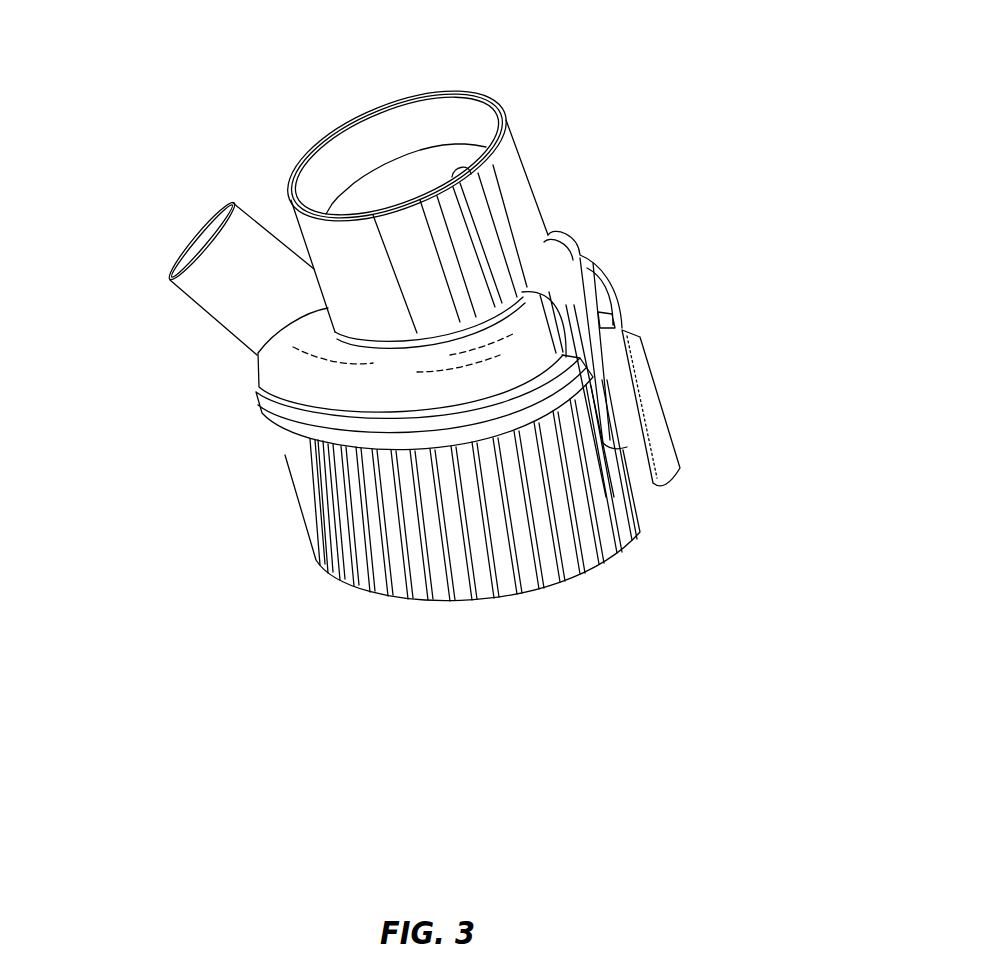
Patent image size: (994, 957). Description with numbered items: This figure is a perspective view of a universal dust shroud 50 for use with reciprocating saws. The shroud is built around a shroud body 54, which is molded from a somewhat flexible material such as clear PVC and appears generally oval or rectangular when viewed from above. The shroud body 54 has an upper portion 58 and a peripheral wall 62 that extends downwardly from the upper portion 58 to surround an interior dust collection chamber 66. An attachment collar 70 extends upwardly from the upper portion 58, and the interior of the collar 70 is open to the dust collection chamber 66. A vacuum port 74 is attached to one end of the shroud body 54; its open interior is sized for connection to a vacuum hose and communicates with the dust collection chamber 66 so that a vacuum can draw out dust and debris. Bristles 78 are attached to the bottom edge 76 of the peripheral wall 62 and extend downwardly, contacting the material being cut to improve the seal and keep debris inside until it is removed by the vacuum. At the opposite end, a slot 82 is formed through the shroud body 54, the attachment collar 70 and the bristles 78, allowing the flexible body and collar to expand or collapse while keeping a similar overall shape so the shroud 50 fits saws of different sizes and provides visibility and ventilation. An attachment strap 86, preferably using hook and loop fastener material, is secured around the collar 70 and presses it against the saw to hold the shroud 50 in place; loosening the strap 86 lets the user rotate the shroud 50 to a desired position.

The universal dust shroud 50 is at (553, 170).
The shroud body 54 is at (500, 370).
The upper portion 58 is at (298, 347).
The peripheral wall 62 is at (325, 400).
The interior dust collection chamber 66 is at (610, 400).
The attachment collar 70 is at (423, 172).
The vacuum port 74 is at (242, 290).
The bottom edge 76 is at (388, 433).
The bristles 78 is at (477, 572).
The slot 82 is at (554, 268).
The attachment strap 86 is at (503, 170).